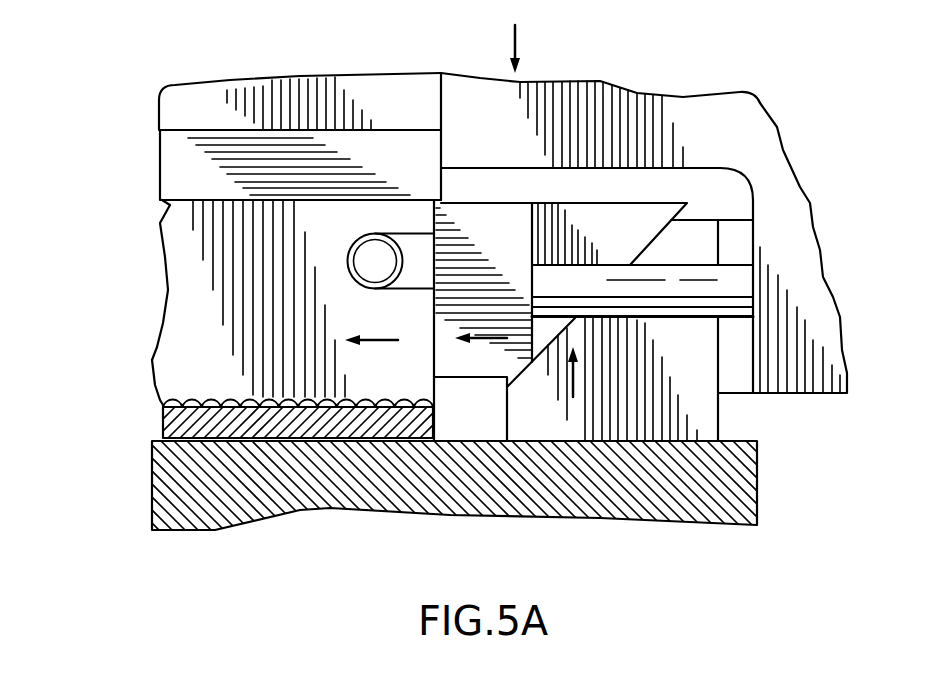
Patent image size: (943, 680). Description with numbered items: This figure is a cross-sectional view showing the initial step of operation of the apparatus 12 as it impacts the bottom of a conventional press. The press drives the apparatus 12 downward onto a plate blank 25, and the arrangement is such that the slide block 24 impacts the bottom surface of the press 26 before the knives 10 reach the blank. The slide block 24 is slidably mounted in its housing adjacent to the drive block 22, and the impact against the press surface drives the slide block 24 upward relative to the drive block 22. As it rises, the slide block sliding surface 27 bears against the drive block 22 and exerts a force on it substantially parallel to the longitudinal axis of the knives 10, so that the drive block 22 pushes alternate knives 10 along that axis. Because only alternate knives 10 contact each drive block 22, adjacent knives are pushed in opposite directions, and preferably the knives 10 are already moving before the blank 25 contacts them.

The knives 10 is at (180, 280).
The apparatus 12 is at (783, 142).
The drive block 22 is at (505, 255).
The slide block 24 is at (703, 355).
The plate blank 25 is at (163, 417).
The press 26 is at (737, 442).
The slide block sliding surface 27 is at (565, 332).